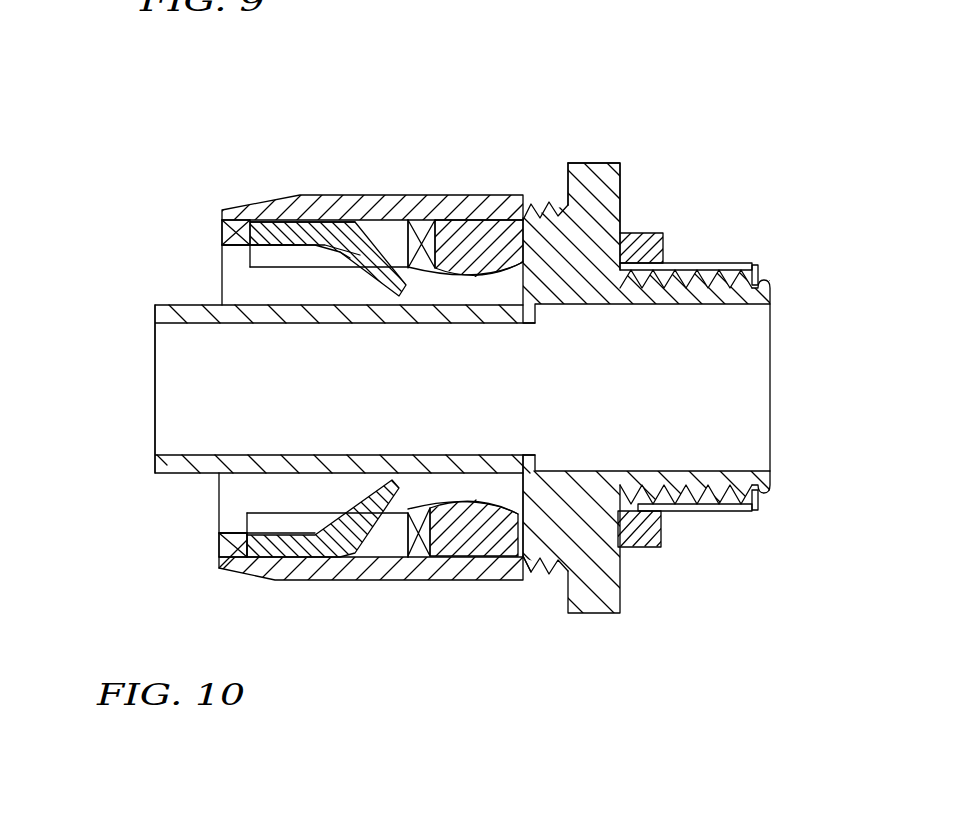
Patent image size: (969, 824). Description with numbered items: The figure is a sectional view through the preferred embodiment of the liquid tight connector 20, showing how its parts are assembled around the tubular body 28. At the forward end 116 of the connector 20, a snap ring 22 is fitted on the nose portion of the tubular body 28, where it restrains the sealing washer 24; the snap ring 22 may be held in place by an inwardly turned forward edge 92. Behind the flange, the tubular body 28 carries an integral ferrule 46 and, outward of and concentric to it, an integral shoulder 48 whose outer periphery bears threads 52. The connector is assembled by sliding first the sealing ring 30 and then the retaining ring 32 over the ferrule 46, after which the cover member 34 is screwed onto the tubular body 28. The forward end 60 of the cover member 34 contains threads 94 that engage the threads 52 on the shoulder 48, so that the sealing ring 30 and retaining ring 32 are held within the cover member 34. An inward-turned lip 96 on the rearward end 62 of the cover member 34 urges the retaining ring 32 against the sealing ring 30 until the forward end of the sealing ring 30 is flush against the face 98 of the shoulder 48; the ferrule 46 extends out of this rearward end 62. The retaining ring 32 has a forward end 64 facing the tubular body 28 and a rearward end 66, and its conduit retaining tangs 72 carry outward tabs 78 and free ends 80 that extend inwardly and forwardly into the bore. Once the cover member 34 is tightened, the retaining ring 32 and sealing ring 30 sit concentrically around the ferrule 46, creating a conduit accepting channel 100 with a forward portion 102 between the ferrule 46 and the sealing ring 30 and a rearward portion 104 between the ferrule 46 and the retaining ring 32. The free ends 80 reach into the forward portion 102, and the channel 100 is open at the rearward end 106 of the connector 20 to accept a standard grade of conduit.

The liquid tight connector 20 is at (418, 98).
The snap ring 22 is at (707, 263).
The sealing washer 24 is at (630, 262).
The tubular body 28 is at (580, 269).
The sealing ring 30 is at (463, 240).
The retaining ring 32 is at (305, 228).
The cover member 34 is at (393, 200).
The ferrule 46 is at (155, 303).
The shoulder 48 is at (537, 247).
The threads 52 is at (537, 568).
The forward end of the cover 60 is at (568, 190).
The rearward end of the cover member 62 is at (215, 227).
The forward end of the retaining ring 64 is at (435, 562).
The rearward end of the retaining ring 66 is at (245, 570).
The conduit retaining tangs 72 is at (368, 270).
The outward tabs 78 is at (350, 225).
The free ends 80 is at (408, 296).
The inwardly turned forward edge 92 is at (754, 283).
The threads 94 is at (547, 195).
The inward-turned lip 96 is at (240, 250).
The face of the shoulder 98 is at (512, 497).
The conduit accepting channel 100 is at (245, 290).
The forward portion 102 is at (492, 300).
The rearward portion 104 is at (335, 300).
The rearward end of the connector 106 is at (155, 392).
The forward end of the connector 116 is at (773, 362).